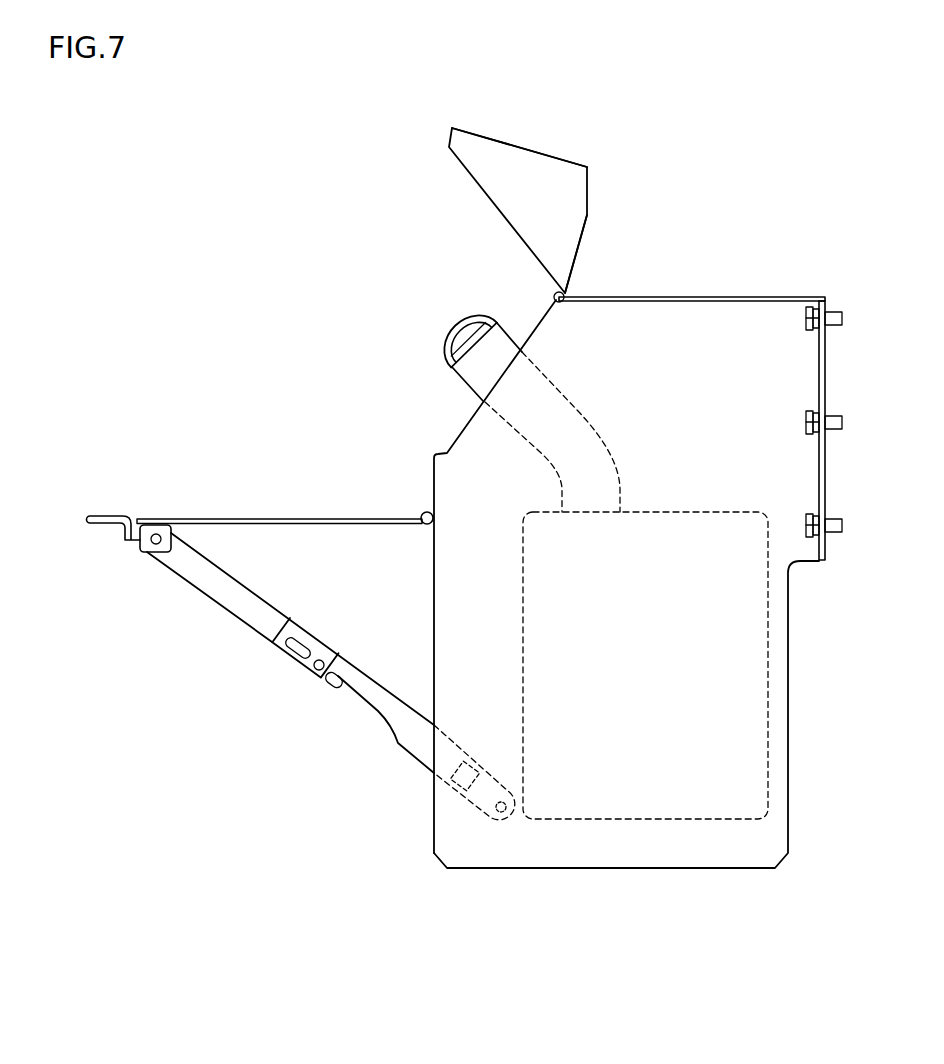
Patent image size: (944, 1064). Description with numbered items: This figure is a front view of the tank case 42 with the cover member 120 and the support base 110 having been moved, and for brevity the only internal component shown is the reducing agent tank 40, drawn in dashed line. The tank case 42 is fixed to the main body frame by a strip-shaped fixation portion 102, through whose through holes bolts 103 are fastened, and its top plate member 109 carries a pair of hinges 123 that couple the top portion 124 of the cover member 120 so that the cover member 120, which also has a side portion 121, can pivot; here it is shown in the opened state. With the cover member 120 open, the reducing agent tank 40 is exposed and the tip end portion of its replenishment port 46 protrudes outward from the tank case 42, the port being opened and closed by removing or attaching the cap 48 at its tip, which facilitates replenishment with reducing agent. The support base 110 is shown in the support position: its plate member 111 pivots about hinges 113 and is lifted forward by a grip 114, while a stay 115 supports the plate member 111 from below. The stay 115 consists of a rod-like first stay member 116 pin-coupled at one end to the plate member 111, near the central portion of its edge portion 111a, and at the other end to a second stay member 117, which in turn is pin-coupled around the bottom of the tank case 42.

The tank case 42 is at (326, 162).
The reducing agent tank 40 is at (645, 758).
The replenishment port 46 is at (565, 432).
The cap 48 is at (462, 337).
The fixation portion 102 is at (822, 367).
The bolts 103 is at (805, 316).
The top plate member 109 is at (699, 296).
The support base 110 is at (239, 508).
The plate member 111 is at (270, 518).
The edge portion 111a is at (139, 520).
The hinges 113 is at (423, 513).
The grip 114 is at (107, 523).
The stay 115 is at (297, 670).
The first stay member 116 is at (207, 580).
The second stay member 117 is at (402, 722).
The cover member 120 is at (444, 122).
The side portion 121 is at (533, 153).
The hinges 123 is at (554, 297).
The top portion 124 is at (586, 232).